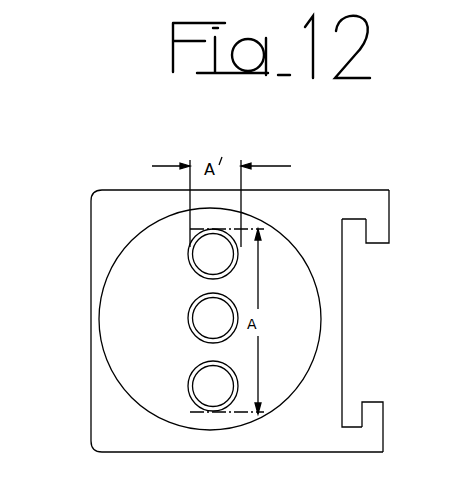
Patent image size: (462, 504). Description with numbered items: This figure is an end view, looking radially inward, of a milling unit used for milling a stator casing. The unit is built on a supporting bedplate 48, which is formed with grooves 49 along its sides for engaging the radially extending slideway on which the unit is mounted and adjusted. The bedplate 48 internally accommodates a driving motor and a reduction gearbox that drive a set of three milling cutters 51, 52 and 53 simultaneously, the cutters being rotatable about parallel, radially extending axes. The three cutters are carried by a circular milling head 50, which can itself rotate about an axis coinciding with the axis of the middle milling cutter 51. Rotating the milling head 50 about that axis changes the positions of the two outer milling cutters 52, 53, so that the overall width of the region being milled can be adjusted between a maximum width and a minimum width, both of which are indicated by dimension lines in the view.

The supporting bedplate 48 is at (266, 440).
The grooves 49 is at (355, 230).
The milling head 50 is at (118, 305).
The middle milling cutter 51 is at (199, 313).
The outer milling cutter 52 is at (202, 254).
The outer milling cutter 53 is at (199, 383).